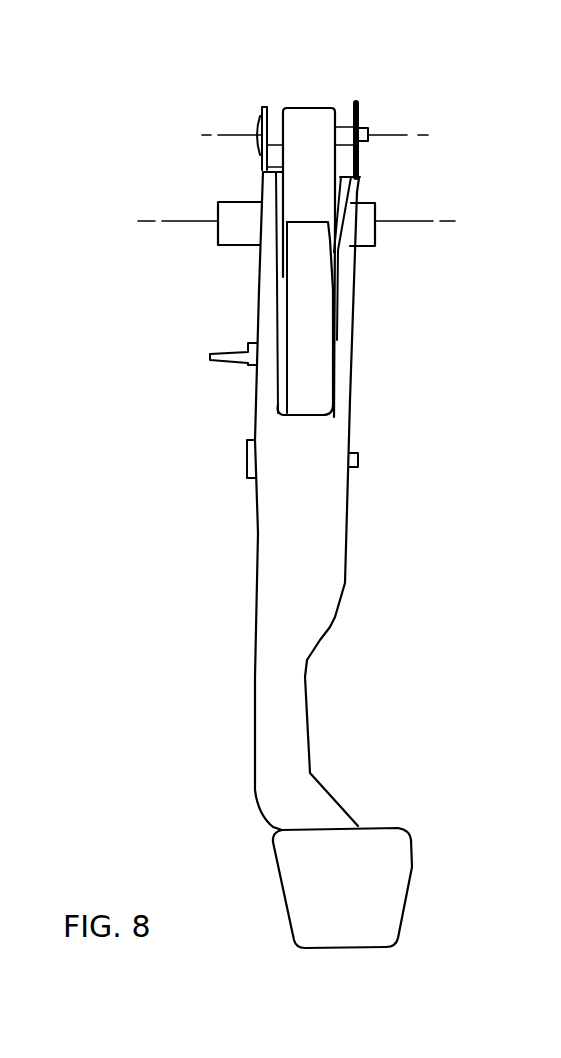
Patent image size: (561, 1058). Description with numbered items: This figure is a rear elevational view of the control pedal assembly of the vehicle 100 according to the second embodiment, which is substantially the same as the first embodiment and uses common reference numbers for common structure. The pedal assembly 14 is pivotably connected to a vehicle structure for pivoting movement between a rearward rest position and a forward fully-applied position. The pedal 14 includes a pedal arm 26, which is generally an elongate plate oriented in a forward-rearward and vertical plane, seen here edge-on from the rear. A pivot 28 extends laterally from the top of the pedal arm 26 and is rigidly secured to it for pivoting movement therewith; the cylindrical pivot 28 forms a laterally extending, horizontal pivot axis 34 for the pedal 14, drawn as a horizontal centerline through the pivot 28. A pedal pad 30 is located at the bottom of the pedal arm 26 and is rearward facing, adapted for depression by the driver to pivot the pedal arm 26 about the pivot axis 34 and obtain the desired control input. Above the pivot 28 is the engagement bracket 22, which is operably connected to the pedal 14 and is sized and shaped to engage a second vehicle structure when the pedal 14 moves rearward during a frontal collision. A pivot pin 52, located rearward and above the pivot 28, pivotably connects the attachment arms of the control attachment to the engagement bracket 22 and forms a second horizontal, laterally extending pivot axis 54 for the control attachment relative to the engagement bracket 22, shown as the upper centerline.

The vehicle 100 is at (462, 556).
The pedal assembly 14 is at (309, 712).
The engagement bracket 22 is at (312, 95).
The pedal arm 26 is at (330, 627).
The pivot 28 is at (230, 200).
The pedal pad 30 is at (414, 874).
The pivot axis 34 is at (415, 215).
The pivot pin 52 is at (362, 123).
The pivot axis 54 is at (240, 127).